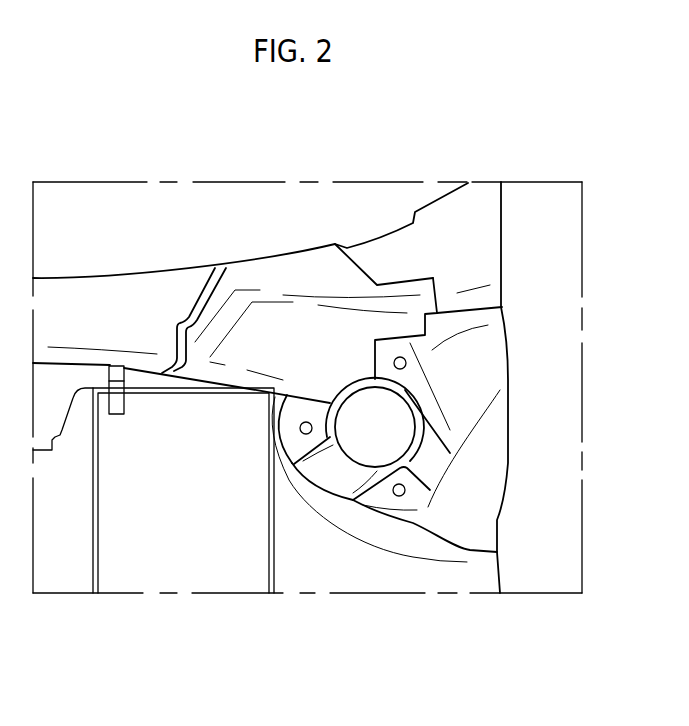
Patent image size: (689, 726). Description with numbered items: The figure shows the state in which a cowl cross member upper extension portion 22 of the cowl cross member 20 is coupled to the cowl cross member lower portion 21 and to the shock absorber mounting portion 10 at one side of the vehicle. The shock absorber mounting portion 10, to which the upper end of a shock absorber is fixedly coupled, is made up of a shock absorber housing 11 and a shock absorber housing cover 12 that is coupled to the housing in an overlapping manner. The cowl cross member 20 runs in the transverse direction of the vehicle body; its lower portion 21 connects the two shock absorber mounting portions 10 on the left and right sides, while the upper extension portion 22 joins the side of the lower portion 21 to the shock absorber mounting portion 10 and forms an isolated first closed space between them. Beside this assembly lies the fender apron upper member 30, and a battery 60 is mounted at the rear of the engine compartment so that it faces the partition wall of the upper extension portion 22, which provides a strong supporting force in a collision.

The shock absorber mounting portion 10 is at (416, 667).
The shock absorber housing 11 is at (330, 563).
The shock absorber housing cover 12 is at (410, 496).
The cowl cross member 20 is at (83, 266).
The cowl cross member lower portion 21 is at (103, 297).
The cowl cross member upper extension portion 22 is at (308, 322).
The fender apron upper member 30 is at (563, 405).
The battery 60 is at (213, 570).